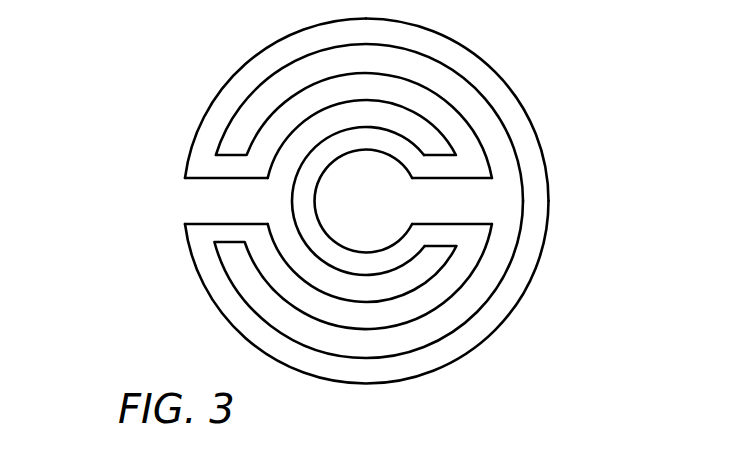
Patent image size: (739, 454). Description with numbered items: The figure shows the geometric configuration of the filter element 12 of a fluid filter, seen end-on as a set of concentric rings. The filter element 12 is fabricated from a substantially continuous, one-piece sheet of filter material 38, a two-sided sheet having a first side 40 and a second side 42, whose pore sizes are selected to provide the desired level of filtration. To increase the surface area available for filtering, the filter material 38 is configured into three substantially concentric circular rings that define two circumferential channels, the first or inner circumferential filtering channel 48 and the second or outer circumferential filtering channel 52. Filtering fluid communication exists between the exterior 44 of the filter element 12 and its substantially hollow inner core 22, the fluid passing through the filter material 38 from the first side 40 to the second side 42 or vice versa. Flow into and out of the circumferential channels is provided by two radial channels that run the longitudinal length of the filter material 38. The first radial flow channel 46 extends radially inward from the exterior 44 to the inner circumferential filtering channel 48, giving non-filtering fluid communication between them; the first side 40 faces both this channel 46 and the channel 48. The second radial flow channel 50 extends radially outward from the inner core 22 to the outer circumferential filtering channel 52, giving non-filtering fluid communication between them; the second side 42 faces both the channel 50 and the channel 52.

The filter element 12 is at (157, 170).
The inner core 22 is at (372, 207).
The filter material 38 is at (225, 102).
The first side 40 is at (460, 43).
The second side 42 is at (495, 112).
The exterior 44 is at (542, 258).
The first radial flow channel 46 is at (224, 212).
The first circumferential filtering channel 48 is at (292, 255).
The second radial flow channel 50 is at (454, 212).
The second circumferential filtering channel 52 is at (458, 318).